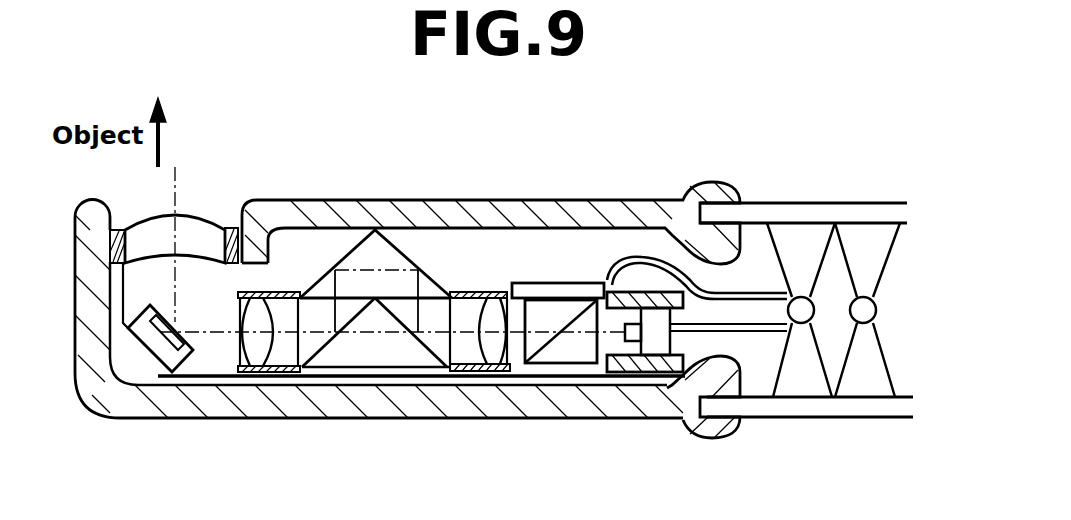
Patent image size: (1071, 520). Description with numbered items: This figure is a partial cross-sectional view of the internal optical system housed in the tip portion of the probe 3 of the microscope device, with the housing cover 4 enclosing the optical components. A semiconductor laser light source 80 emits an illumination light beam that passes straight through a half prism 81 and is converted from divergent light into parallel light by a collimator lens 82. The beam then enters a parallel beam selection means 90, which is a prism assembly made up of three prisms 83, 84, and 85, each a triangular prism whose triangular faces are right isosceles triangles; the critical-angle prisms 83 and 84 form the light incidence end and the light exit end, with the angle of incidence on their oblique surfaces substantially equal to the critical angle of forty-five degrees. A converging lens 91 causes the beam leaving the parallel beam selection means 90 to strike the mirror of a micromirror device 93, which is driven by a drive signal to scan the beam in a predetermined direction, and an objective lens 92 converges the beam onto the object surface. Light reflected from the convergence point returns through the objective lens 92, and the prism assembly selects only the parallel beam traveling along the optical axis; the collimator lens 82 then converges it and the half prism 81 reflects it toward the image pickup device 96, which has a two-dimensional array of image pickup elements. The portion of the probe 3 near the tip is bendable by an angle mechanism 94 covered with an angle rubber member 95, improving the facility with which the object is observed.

The probe 3 is at (78, 325).
The housing cover 4 is at (232, 223).
The semiconductor laser light source 80 is at (652, 327).
The half prism 81 is at (547, 313).
The collimator lens 82 is at (495, 312).
The critical-angle prism 83 is at (313, 340).
The critical-angle prism 84 is at (435, 350).
The prism 85 is at (382, 252).
The parallel beam selection means 90 is at (337, 240).
The converging lens 91 is at (258, 352).
The objective lens 92 is at (197, 228).
The micromirror device 93 is at (158, 348).
The angle mechanism 94 is at (781, 190).
The angle rubber member 95 is at (803, 407).
The image pickup device 96 is at (575, 292).